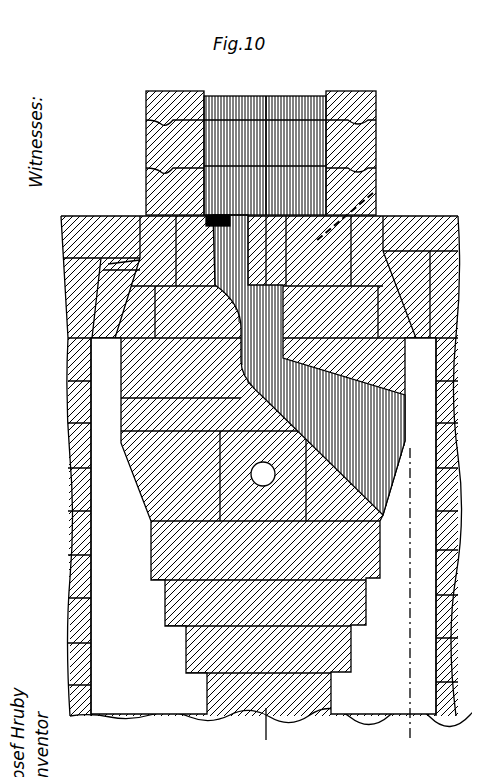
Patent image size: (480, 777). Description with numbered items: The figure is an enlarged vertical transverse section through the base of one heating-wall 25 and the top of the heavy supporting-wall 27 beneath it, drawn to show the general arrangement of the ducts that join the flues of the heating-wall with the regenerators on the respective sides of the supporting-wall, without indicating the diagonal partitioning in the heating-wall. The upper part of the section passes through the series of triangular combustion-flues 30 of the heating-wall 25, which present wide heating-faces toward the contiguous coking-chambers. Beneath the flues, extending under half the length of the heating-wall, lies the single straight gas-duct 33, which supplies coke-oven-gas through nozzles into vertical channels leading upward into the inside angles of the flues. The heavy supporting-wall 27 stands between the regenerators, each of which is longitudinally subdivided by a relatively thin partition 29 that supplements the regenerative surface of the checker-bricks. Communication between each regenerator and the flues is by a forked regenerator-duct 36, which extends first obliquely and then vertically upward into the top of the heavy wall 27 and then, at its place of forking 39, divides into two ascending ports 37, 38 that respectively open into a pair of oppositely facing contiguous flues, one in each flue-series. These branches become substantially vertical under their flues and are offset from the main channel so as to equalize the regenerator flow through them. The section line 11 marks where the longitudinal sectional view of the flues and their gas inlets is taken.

The heating-wall 25 is at (172, 80).
The series of triangular combustion-flues 30 is at (310, 90).
The ascending port 38 is at (370, 185).
The ascending port 37 is at (100, 256).
The place of forking 39 is at (85, 320).
The forked regenerator-duct 36 is at (140, 489).
The gas-duct 33 is at (262, 472).
The heavy supporting-wall 27 is at (157, 547).
The partition 29 is at (88, 603).
The section line 11 is at (230, 86).